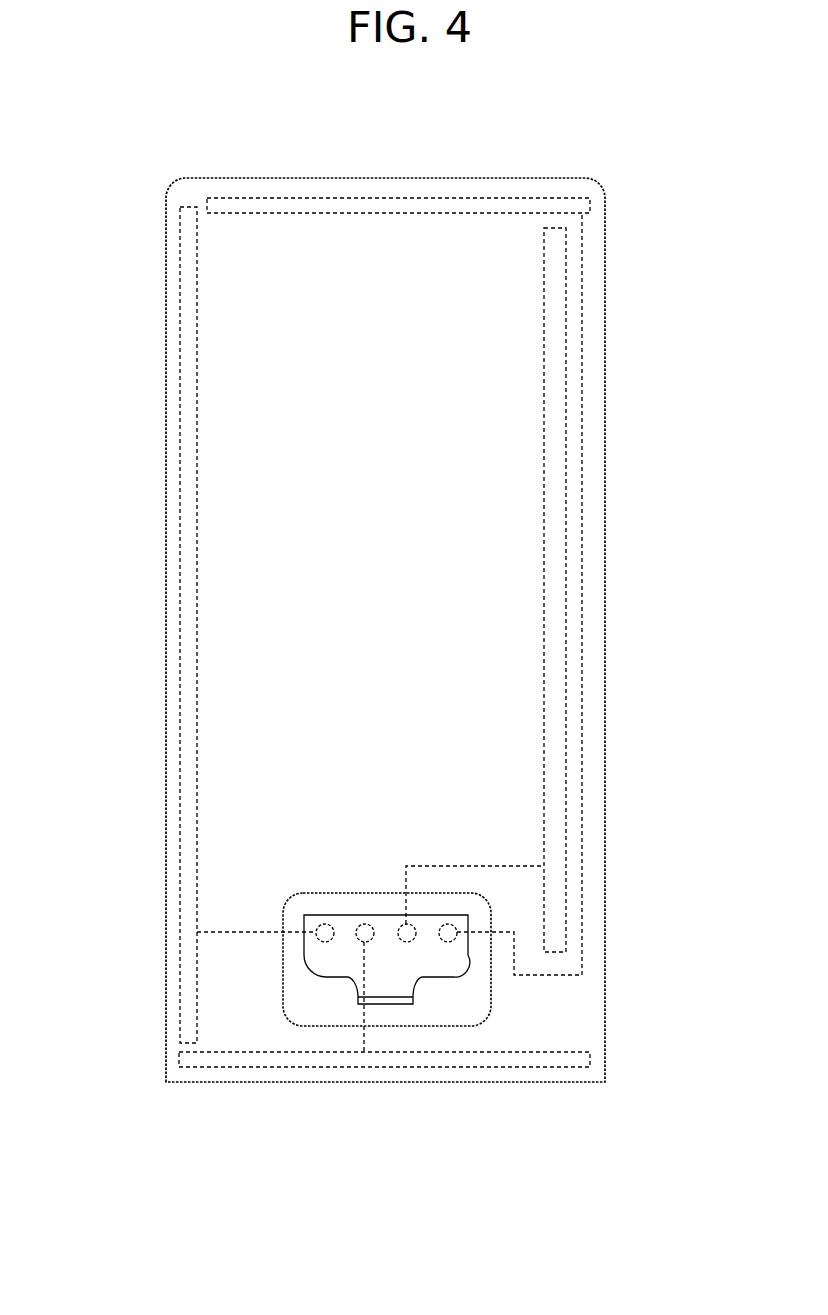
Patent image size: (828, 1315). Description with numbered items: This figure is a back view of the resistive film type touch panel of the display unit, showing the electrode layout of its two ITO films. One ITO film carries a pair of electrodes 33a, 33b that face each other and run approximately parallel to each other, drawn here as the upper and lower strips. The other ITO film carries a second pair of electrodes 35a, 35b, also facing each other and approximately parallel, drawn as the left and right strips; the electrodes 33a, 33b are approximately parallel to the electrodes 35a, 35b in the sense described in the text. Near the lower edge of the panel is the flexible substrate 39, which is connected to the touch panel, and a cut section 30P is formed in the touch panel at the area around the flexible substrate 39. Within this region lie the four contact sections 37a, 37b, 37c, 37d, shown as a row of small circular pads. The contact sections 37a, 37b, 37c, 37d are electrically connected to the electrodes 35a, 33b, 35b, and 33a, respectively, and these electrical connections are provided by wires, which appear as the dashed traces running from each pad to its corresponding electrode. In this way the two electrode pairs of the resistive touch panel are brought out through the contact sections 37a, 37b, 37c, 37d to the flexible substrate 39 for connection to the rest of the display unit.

The electrode 33a is at (337, 205).
The electrode 33b is at (363, 1077).
The electrode 35a is at (190, 456).
The electrode 35b is at (560, 445).
The contact section 37a is at (317, 933).
The contact section 37b is at (357, 937).
The contact section 37c is at (413, 940).
The contact section 37d is at (457, 932).
The cut section 30P is at (307, 1002).
The flexible substrate 39 is at (457, 1027).